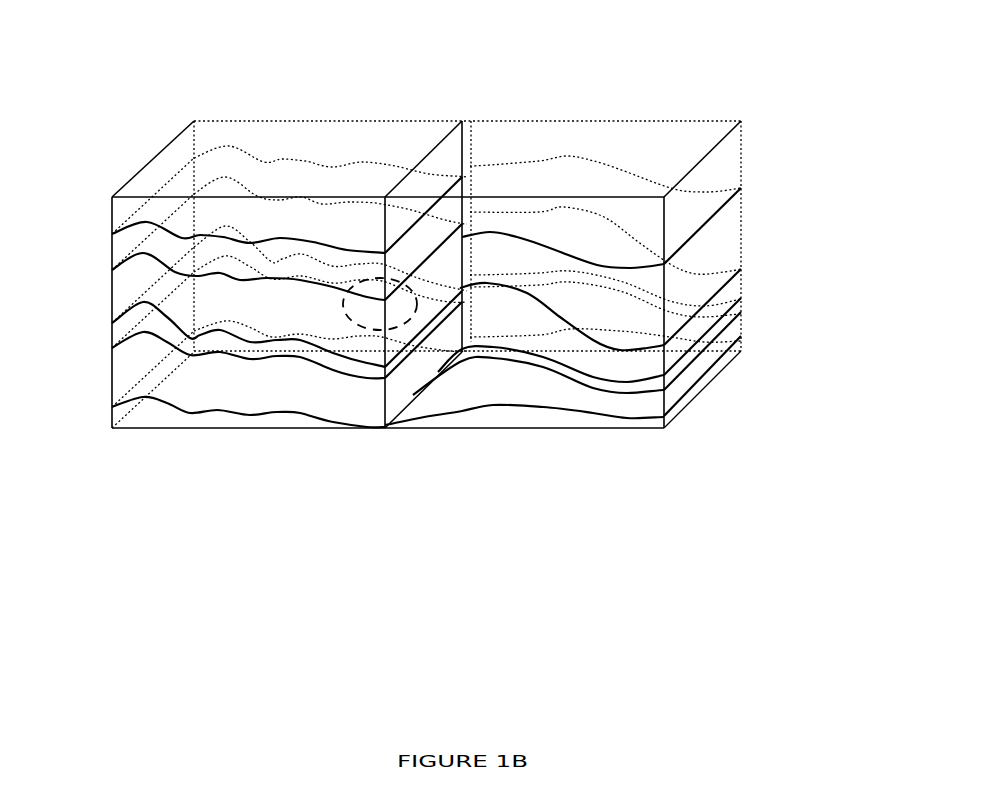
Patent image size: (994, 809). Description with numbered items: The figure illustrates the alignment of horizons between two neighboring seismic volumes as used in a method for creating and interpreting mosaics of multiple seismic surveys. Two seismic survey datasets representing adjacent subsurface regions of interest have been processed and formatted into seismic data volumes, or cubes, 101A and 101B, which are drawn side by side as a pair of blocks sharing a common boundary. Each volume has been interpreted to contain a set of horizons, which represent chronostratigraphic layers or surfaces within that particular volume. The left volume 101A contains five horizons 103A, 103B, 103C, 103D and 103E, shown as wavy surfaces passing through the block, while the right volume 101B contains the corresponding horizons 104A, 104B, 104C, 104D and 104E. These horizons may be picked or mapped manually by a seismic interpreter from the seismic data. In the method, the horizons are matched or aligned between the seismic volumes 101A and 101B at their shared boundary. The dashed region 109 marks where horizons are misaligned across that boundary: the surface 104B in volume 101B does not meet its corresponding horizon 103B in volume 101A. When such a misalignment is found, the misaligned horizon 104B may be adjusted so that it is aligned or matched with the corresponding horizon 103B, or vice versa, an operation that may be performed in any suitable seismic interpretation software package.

The seismic data volume 101A is at (150, 140).
The seismic data volume 101B is at (523, 102).
The horizon 103A is at (112, 234).
The horizon 103B is at (112, 270).
The horizon 103C is at (112, 323).
The horizon 103D is at (112, 348).
The horizon 103E is at (112, 407).
The horizon 104A is at (741, 188).
The horizon 104B is at (741, 269).
The horizon 104C is at (741, 297).
The horizon 104D is at (741, 311).
The horizon 104E is at (741, 334).
The misaligned horizon region 109 is at (383, 281).